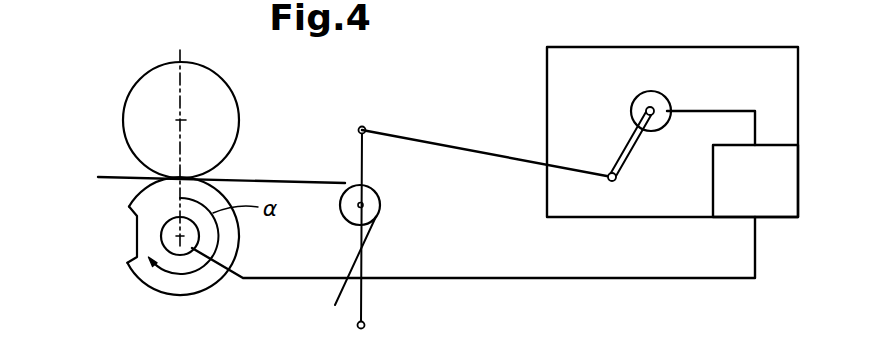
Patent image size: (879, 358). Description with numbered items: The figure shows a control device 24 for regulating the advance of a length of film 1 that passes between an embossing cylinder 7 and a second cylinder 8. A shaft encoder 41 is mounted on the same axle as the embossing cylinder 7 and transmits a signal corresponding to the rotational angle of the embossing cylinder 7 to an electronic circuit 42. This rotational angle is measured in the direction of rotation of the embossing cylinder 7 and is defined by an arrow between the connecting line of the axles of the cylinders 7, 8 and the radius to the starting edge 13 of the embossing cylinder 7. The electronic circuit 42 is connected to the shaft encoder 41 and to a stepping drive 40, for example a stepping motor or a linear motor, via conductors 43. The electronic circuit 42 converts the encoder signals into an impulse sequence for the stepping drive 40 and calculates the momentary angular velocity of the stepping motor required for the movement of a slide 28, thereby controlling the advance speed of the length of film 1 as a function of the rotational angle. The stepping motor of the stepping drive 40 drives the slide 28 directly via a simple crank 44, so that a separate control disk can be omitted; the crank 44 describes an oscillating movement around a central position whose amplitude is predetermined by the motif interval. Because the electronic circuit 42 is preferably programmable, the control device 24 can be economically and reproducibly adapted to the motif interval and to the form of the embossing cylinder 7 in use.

The length of film 1 is at (285, 180).
The embossing cylinder 7 is at (144, 241).
The cylinder 8 is at (137, 117).
The starting edge 13 is at (130, 260).
The control device 24 is at (555, 58).
The slide 28 is at (462, 148).
The stepping drive 40 is at (655, 100).
The shaft encoder 41 is at (185, 249).
The electronic circuit 42 is at (778, 205).
The conductors 43 is at (698, 113).
The crank 44 is at (628, 143).